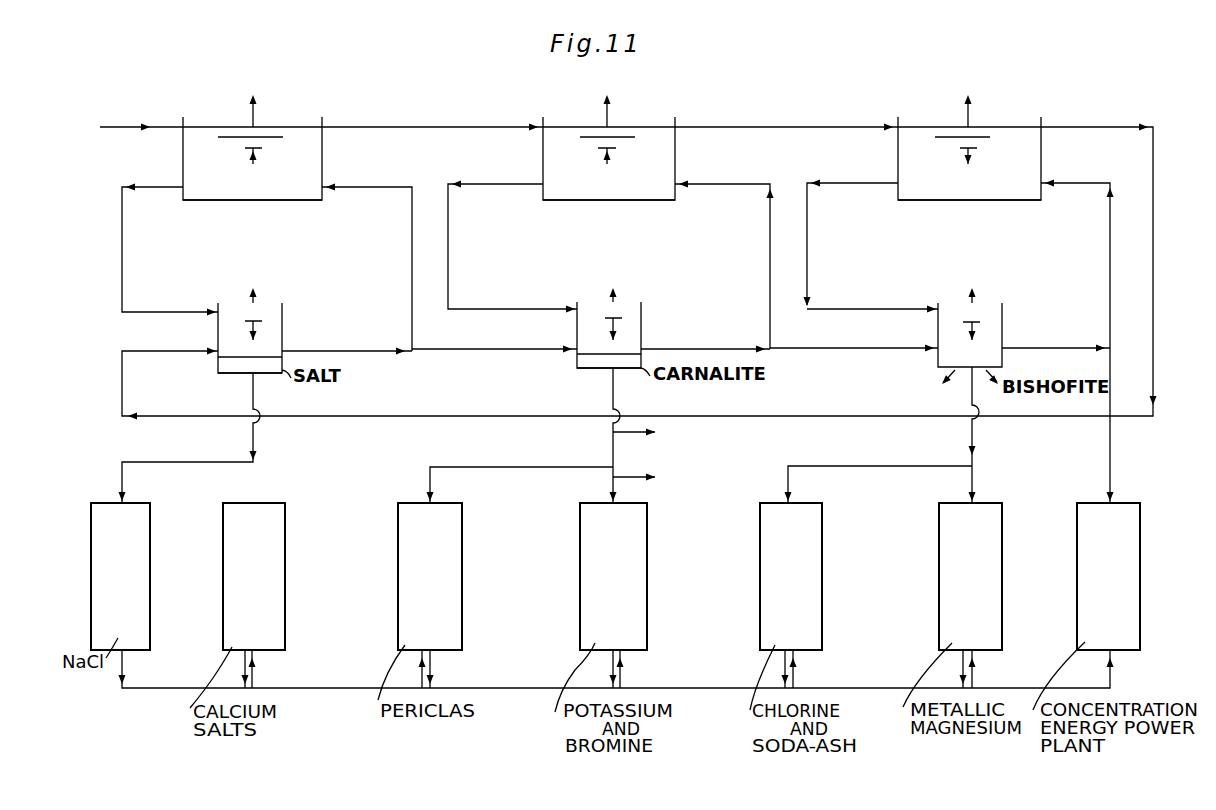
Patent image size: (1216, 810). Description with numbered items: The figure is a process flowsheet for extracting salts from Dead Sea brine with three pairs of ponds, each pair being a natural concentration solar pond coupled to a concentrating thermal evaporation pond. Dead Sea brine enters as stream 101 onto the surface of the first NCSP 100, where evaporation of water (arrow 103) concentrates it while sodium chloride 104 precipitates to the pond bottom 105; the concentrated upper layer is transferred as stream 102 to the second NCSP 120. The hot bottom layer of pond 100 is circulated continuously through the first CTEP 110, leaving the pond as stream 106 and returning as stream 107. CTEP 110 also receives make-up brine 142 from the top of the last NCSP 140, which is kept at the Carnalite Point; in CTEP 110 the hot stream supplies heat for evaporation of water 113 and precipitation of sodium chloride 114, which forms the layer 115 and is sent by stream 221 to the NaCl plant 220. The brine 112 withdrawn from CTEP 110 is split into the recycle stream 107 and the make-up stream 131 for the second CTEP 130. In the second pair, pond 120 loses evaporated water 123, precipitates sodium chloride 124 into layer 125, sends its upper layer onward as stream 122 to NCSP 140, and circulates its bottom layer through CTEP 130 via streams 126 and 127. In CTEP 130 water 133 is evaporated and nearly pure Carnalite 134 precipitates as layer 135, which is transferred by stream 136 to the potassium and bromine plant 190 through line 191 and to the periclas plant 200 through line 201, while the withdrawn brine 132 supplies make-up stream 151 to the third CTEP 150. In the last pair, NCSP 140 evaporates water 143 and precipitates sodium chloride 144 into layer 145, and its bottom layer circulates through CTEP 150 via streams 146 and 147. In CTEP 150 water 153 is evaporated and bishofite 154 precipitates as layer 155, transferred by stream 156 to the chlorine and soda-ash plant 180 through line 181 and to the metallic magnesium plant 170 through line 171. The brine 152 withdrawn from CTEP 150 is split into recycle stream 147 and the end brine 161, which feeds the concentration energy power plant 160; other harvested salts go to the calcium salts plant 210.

The first NCSP-EP 100 is at (327, 114).
The Dead Sea brine feed stream 101 is at (106, 127).
The preconcentrated upper layer brine stream 102 is at (364, 129).
The evaporated water 103 is at (257, 104).
The precipitating NaCl 104 is at (264, 158).
The pond bottom with precipitated NaCl layer 105 is at (253, 202).
The circulating bottom layer outlet stream 106 is at (155, 186).
The circulating bottom layer return stream 107 is at (352, 187).
The first CTEP 110 is at (288, 310).
The circulating brine outlet stream 112 is at (314, 352).
The evaporated water 113 is at (246, 296).
The precipitating NaCl 114 is at (249, 330).
The precipitated NaCl layer 115 is at (232, 375).
The second NCSP-EP 120 is at (680, 112).
The upper layer brine outlet stream 122 is at (728, 127).
The evaporated water 123 is at (611, 107).
The precipitating NaCl 124 is at (613, 160).
The precipitated NaCl layer 125 is at (607, 202).
The circulating bottom layer outlet stream 126 is at (517, 184).
The circulating bottom layer return stream 127 is at (703, 187).
The second CTEP 130 is at (646, 312).
The make-up brine stream 131 is at (452, 355).
The circulating brine outlet stream 132 is at (684, 355).
The evaporated water 133 is at (606, 300).
The precipitating Carnalite 134 is at (576, 331).
The precipitated Carnalite layer 135 is at (575, 367).
The Carnalite transfer stream 136 is at (661, 433).
The last NCSP 140 is at (1050, 110).
The make-up brine stream 142 is at (1084, 124).
The evaporated water 143 is at (974, 105).
The precipitating NaCl 144 is at (980, 158).
The precipitated NaCl layer 145 is at (968, 202).
The circulating bottom layer outlet stream 146 is at (840, 186).
The circulating bottom layer return stream 147 is at (1104, 185).
The third CTEP 150 is at (837, 309).
The make-up brine stream 151 is at (854, 338).
The circulating brine outlet stream 152 is at (1024, 349).
The evaporated water 153 is at (963, 294).
The precipitating bishofite 154 is at (960, 329).
The precipitated bishofite layer 155 is at (920, 387).
The bishofite transfer stream 156 is at (978, 434).
The concentration energy power plant 160 is at (1077, 526).
The end brine stream 161 is at (1113, 458).
The metallic magnesium plant 170 is at (1002, 568).
The bishofite feed line to magnesium plant 171 is at (999, 483).
The chlorine and soda-ash plant 180 is at (822, 566).
The bishofite feed line to chlorine plant 181 is at (858, 470).
The potassium and bromine plant 190 is at (647, 568).
The Carnalite feed line to potassium plant 191 is at (657, 478).
The periclas plant 200 is at (462, 579).
The Carnalite feed line to periclas plant 201 is at (495, 470).
The calcium salts plant 210 is at (285, 580).
The NaCl refining plant 220 is at (150, 580).
The NaCl transfer stream 221 is at (156, 463).